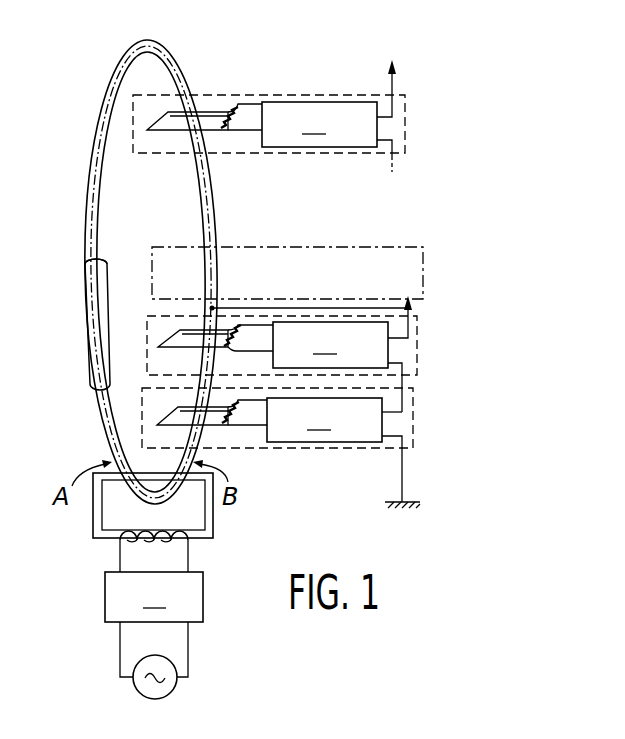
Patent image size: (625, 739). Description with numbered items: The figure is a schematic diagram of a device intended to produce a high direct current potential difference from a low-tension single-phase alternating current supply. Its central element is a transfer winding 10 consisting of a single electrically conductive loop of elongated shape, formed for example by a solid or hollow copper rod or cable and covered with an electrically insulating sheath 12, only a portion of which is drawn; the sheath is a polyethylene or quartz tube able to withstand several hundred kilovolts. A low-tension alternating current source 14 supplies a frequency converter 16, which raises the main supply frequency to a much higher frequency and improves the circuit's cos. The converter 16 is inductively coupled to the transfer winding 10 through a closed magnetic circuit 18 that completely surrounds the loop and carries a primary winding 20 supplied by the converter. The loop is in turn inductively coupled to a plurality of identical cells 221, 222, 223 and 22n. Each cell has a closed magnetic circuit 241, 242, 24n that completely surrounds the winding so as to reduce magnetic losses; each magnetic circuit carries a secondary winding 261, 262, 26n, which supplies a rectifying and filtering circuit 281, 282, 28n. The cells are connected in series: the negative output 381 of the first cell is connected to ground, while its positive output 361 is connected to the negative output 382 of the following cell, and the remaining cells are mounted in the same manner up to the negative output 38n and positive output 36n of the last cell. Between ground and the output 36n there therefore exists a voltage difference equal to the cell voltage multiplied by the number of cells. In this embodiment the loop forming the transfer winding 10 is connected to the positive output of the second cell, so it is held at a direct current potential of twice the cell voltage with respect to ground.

The transfer winding 10 is at (102, 117).
The electrically insulating sheath 12 is at (85, 183).
The low-tension alternating current source 14 is at (136, 681).
The frequency converter 16 is at (154, 581).
The closed magnetic circuit 18 is at (100, 520).
The primary winding 20 is at (167, 544).
The cell 22n is at (405, 128).
The cell 223 is at (423, 252).
The cell 222 is at (417, 326).
The cell 221 is at (413, 442).
The closed magnetic circuit 24n is at (173, 131).
The closed magnetic circuit 242 is at (148, 344).
The closed magnetic circuit 241 is at (165, 420).
The secondary winding 26n is at (225, 112).
The secondary winding 262 is at (238, 330).
The secondary winding 261 is at (240, 425).
The rectifying and filtering circuit 28n is at (302, 124).
The rectifying and filtering circuit 282 is at (308, 345).
The rectifying and filtering circuit 281 is at (305, 420).
The positive output 36n is at (393, 90).
The positive output 361 is at (403, 408).
The negative output 38n is at (393, 162).
The negative output 382 is at (402, 368).
The negative output 381 is at (400, 490).